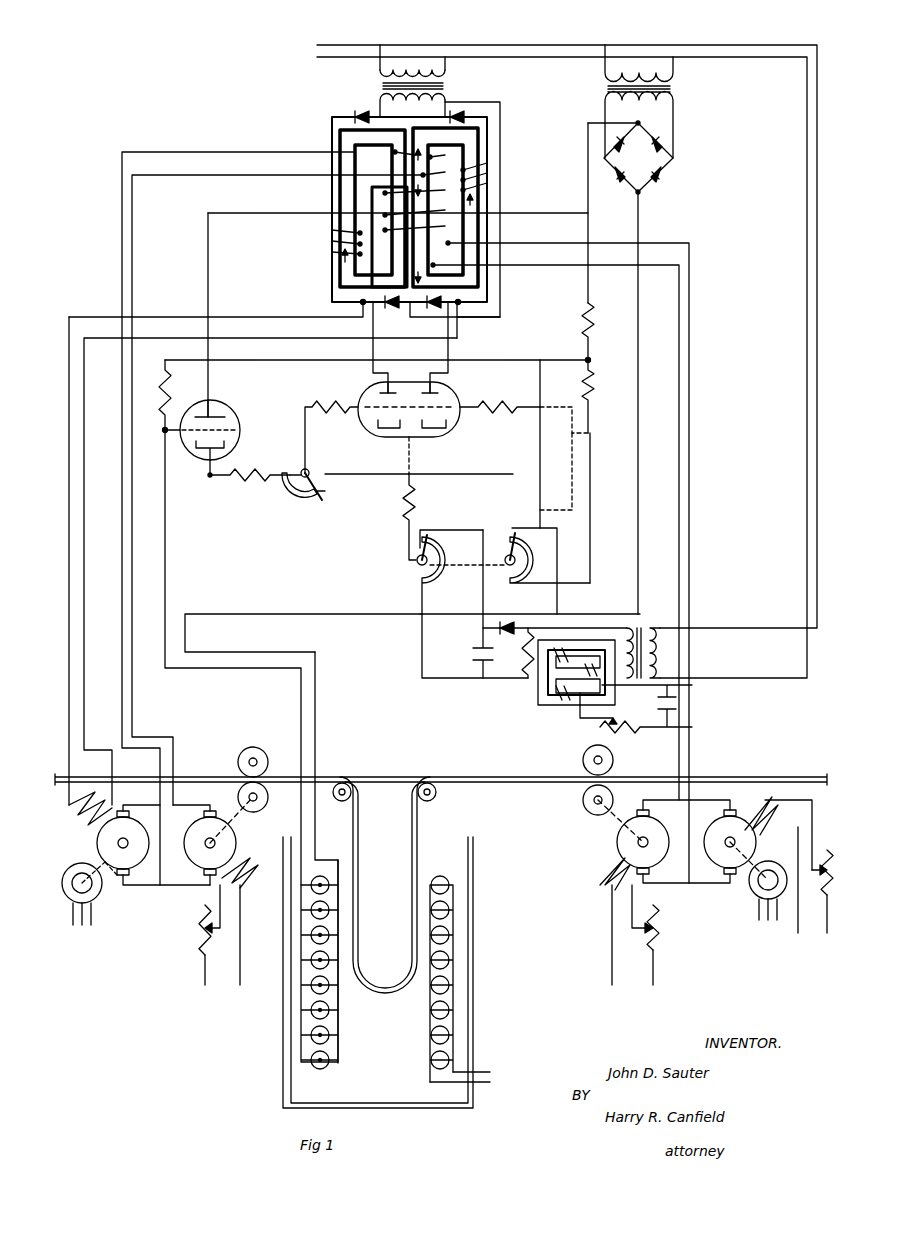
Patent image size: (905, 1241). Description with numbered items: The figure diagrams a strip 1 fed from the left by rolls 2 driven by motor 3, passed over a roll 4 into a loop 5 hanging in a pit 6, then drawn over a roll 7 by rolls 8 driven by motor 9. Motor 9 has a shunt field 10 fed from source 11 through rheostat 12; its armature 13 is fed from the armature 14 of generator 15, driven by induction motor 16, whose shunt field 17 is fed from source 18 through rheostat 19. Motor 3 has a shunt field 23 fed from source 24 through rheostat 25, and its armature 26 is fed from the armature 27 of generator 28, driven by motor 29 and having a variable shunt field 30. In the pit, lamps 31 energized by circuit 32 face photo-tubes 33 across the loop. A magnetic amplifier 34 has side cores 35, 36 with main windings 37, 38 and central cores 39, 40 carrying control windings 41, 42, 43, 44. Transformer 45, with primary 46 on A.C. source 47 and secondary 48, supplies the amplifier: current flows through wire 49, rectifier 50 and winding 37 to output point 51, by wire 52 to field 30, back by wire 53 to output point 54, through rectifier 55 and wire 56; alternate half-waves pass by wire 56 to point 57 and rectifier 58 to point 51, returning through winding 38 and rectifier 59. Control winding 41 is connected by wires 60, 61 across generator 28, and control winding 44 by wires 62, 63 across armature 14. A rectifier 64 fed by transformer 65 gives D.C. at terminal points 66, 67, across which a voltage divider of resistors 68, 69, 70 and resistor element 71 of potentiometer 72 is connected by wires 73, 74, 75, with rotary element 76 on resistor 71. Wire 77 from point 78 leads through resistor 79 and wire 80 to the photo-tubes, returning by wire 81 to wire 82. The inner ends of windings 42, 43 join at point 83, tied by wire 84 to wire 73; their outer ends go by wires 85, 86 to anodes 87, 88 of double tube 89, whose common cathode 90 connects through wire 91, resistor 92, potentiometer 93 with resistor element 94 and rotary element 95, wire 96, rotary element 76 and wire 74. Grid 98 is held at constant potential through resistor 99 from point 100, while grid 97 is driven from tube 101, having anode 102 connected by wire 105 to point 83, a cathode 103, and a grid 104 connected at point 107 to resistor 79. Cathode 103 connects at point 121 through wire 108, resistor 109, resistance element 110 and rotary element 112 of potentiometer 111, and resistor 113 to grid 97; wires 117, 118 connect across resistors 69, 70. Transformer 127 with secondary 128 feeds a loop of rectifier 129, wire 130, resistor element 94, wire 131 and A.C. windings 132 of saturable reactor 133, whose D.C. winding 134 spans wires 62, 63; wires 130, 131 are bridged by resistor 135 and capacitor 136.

The strip of material 1 is at (196, 777).
The rolls 2 is at (268, 762).
The motor 3 is at (232, 838).
The roll 4 is at (338, 799).
The loop 5 is at (360, 945).
The pit 6 is at (378, 972).
The roll 7 is at (432, 794).
The rolls 8 is at (613, 762).
The motor 9 is at (617, 840).
The shunt field 10 is at (600, 880).
The source of direct current 11 is at (645, 970).
The adjusting rheostat 12 is at (645, 942).
The armature 13 is at (655, 822).
The armature 14 is at (718, 822).
The D.C. generator 15 is at (752, 846).
The induction motor 16 is at (750, 890).
The shunt field 17 is at (778, 800).
The D.C. source 18 is at (827, 920).
The rheostat 19 is at (827, 860).
The shunt field 23 is at (253, 880).
The source of D.C. 24 is at (240, 962).
The adjusting rheostat 25 is at (212, 942).
The armature 26 is at (203, 820).
The armature 27 is at (135, 820).
The D.C. generator 28 is at (133, 862).
The motor 29 is at (98, 895).
The variable shunt field 30 is at (85, 822).
The electric lamps 31 is at (432, 912).
The circuit 32 is at (485, 1072).
The photo-tubes 33 is at (330, 932).
The magnetic amplifier 34 is at (512, 130).
The side core 35 is at (340, 154).
The side core 36 is at (470, 149).
The main winding 37 is at (332, 238).
The main winding 38 is at (487, 165).
The central core 39 is at (388, 159).
The central core 40 is at (446, 156).
The control winding 41 is at (442, 173).
The control winding 42 is at (423, 189).
The control winding 43 is at (423, 226).
The control winding 44 is at (388, 237).
The transformer 45 is at (446, 84).
The primary 46 is at (378, 74).
The source of A.C. 47 is at (317, 46).
The secondary 48 is at (378, 97).
The wire 49 is at (430, 107).
The rectifier 50 is at (352, 116).
The output point 51 is at (360, 302).
The wire 52 is at (275, 317).
The wire 53 is at (305, 338).
The output point 54 is at (464, 302).
The rectifier 55 is at (434, 315).
The wire 56 is at (490, 102).
The point 57 is at (410, 310).
The rectifier 58 is at (387, 311).
The rectifier 59 is at (458, 112).
The wire 60 is at (232, 152).
The wire 61 is at (228, 175).
The wire 62 is at (525, 243).
The wire 63 is at (525, 265).
The rectifier 64 is at (638, 157).
The transformer 65 is at (673, 89).
The terminal point 66 is at (641, 124).
The terminal point 67 is at (642, 192).
The resistor 68 is at (598, 318).
The resistor 69 is at (598, 388).
The resistor 70 is at (595, 465).
The resistor element 71 is at (530, 550).
The potentiometer 72 is at (506, 566).
The wire 73 is at (588, 182).
The wire 74 is at (557, 553).
The wire 75 is at (643, 563).
The rotary element 76 is at (510, 545).
The wire 77 is at (530, 360).
The point 78 is at (595, 360).
The resistor 79 is at (171, 383).
The wire 80 is at (165, 558).
The wire 81 is at (316, 718).
The wire 82 is at (294, 614).
The point 83 is at (423, 208).
The wire 84 is at (535, 213).
The wire 85 is at (373, 347).
The wire 86 is at (448, 347).
The anode 87 is at (394, 380).
The anode 88 is at (426, 379).
The double electronic tube 89 is at (458, 392).
The common cathode 90 is at (432, 438).
The wire 91 is at (411, 460).
The resistor 92 is at (415, 497).
The potentiometer 93 is at (418, 574).
The resistor element 94 is at (430, 577).
The rotary element 95 is at (418, 550).
The wire 96 is at (462, 530).
The grid 97 is at (376, 425).
The grid 98 is at (448, 425).
The resistor 99 is at (500, 400).
The potential point 100 is at (592, 430).
The three element electronic tube 101 is at (232, 412).
The anode 102 is at (226, 405).
The cathode 103 is at (205, 455).
The grid 104 is at (240, 430).
The wire 105 is at (208, 290).
The point 107 is at (163, 432).
The wire 108 is at (245, 480).
The resistor 109 is at (268, 463).
The resistance element 110 is at (318, 492).
The potentiometer 111 is at (305, 469).
The rotary element 112 is at (323, 496).
The resistor 113 is at (330, 400).
The wire 117 is at (541, 383).
The wire 118 is at (555, 510).
The point 121 is at (208, 480).
The transformer 127 is at (655, 630).
The secondary 128 is at (628, 628).
The rectifier 129 is at (515, 626).
The wire 130 is at (478, 610).
The wire 131 is at (424, 624).
The A.C. windings 132 is at (565, 671).
The saturable reactor 133 is at (545, 695).
The D.C. winding 134 is at (587, 663).
The resistor 135 is at (526, 658).
The capacitor 136 is at (472, 652).